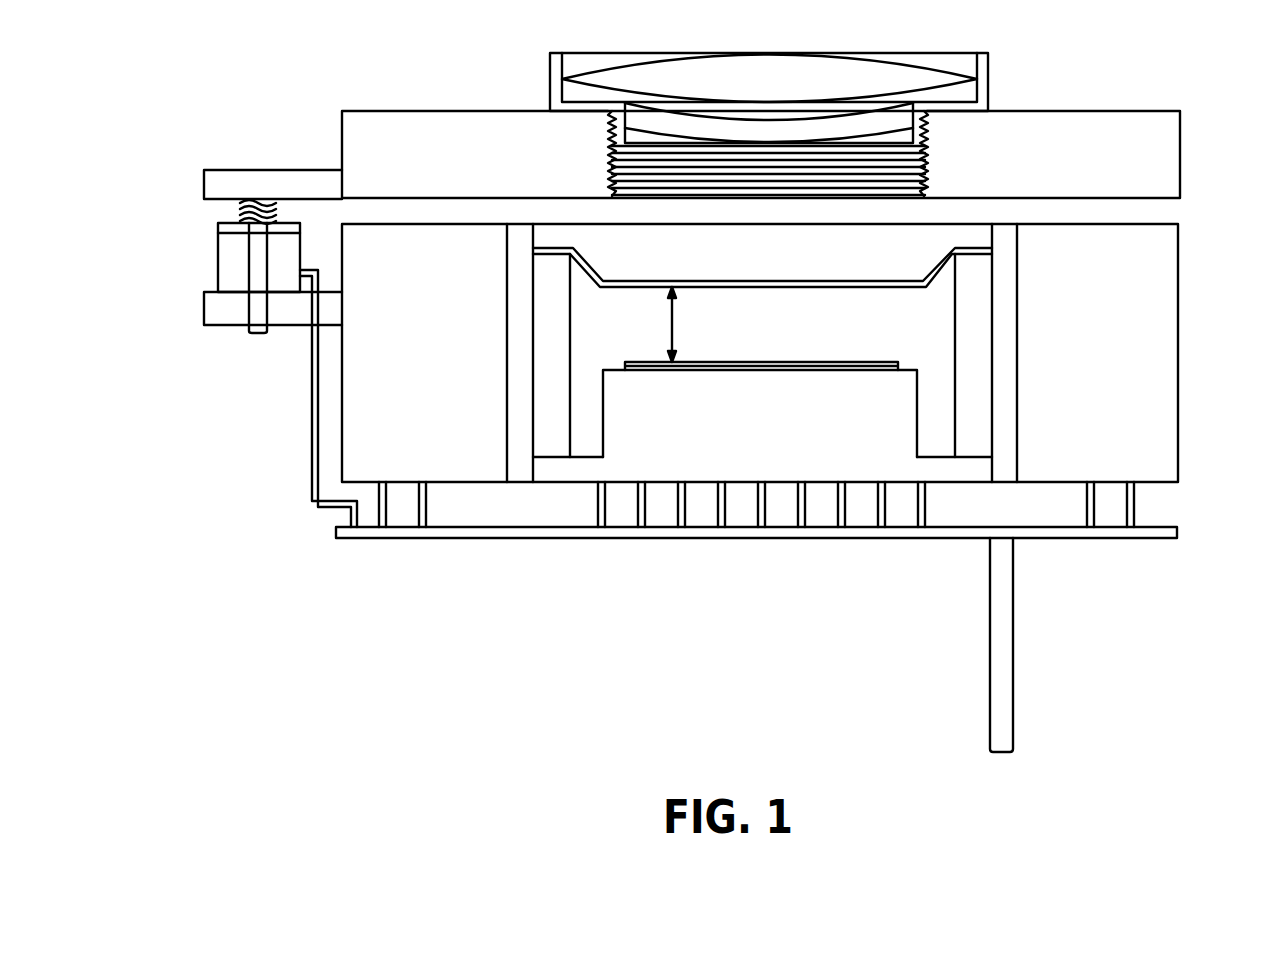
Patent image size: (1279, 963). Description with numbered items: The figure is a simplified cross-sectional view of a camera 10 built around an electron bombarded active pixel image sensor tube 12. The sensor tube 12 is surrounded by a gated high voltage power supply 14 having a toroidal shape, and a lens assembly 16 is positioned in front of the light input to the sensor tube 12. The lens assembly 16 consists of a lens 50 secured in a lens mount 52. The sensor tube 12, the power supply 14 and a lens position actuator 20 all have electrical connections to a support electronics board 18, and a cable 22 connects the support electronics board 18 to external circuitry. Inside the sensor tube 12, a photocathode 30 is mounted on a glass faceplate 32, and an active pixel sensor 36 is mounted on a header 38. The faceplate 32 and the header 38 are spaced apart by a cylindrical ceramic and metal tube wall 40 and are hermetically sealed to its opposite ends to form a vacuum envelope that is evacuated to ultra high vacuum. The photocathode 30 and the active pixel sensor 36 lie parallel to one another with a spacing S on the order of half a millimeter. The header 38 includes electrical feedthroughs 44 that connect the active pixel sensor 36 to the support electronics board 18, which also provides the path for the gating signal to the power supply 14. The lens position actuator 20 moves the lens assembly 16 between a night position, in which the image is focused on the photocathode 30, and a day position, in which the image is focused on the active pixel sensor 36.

The camera 10 is at (285, 459).
The electron bombarded active pixel image sensor tube 12 is at (992, 397).
The gated high voltage power supply 14 is at (1180, 277).
The lens assembly 16 is at (1180, 158).
The support electronics board 18 is at (1178, 538).
The lens position actuator 20 is at (218, 259).
The cable 22 is at (1013, 625).
The photocathode 30 is at (772, 292).
The glass faceplate 32 is at (838, 262).
The active pixel sensor 36 is at (803, 362).
The header 38 is at (743, 457).
The tube wall 40 is at (972, 325).
The electrical feedthroughs 44 is at (598, 500).
The lens 50 is at (775, 70).
The lens mount 52 is at (1072, 110).
The spacing S is at (670, 322).